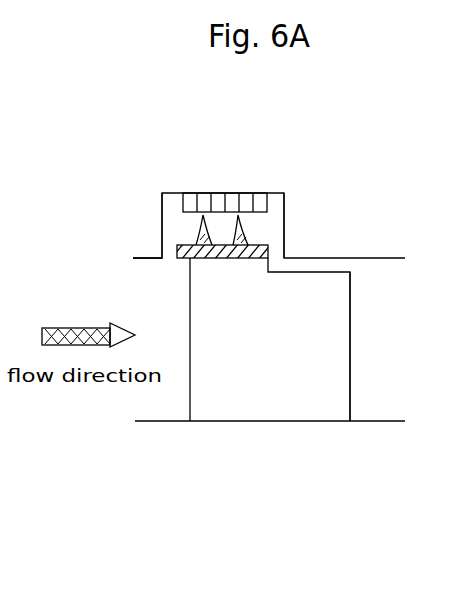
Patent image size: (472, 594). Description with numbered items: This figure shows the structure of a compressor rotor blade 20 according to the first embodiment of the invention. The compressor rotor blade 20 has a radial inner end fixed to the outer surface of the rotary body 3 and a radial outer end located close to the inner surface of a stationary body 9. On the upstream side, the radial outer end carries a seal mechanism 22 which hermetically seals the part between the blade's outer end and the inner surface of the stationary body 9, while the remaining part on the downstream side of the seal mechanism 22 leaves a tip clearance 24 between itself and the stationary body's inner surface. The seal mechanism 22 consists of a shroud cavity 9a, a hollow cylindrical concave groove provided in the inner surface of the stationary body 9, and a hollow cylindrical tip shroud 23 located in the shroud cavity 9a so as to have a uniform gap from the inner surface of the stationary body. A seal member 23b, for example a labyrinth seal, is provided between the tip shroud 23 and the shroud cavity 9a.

The rotary body 3 is at (155, 422).
The stationary body 9 is at (285, 211).
The shroud cavity 9a is at (178, 228).
The compressor rotor blade 20 is at (188, 313).
The seal mechanism 22 is at (148, 202).
The tip shroud 23 is at (228, 258).
The seal member 23b is at (218, 217).
The tip clearance 24 is at (329, 265).